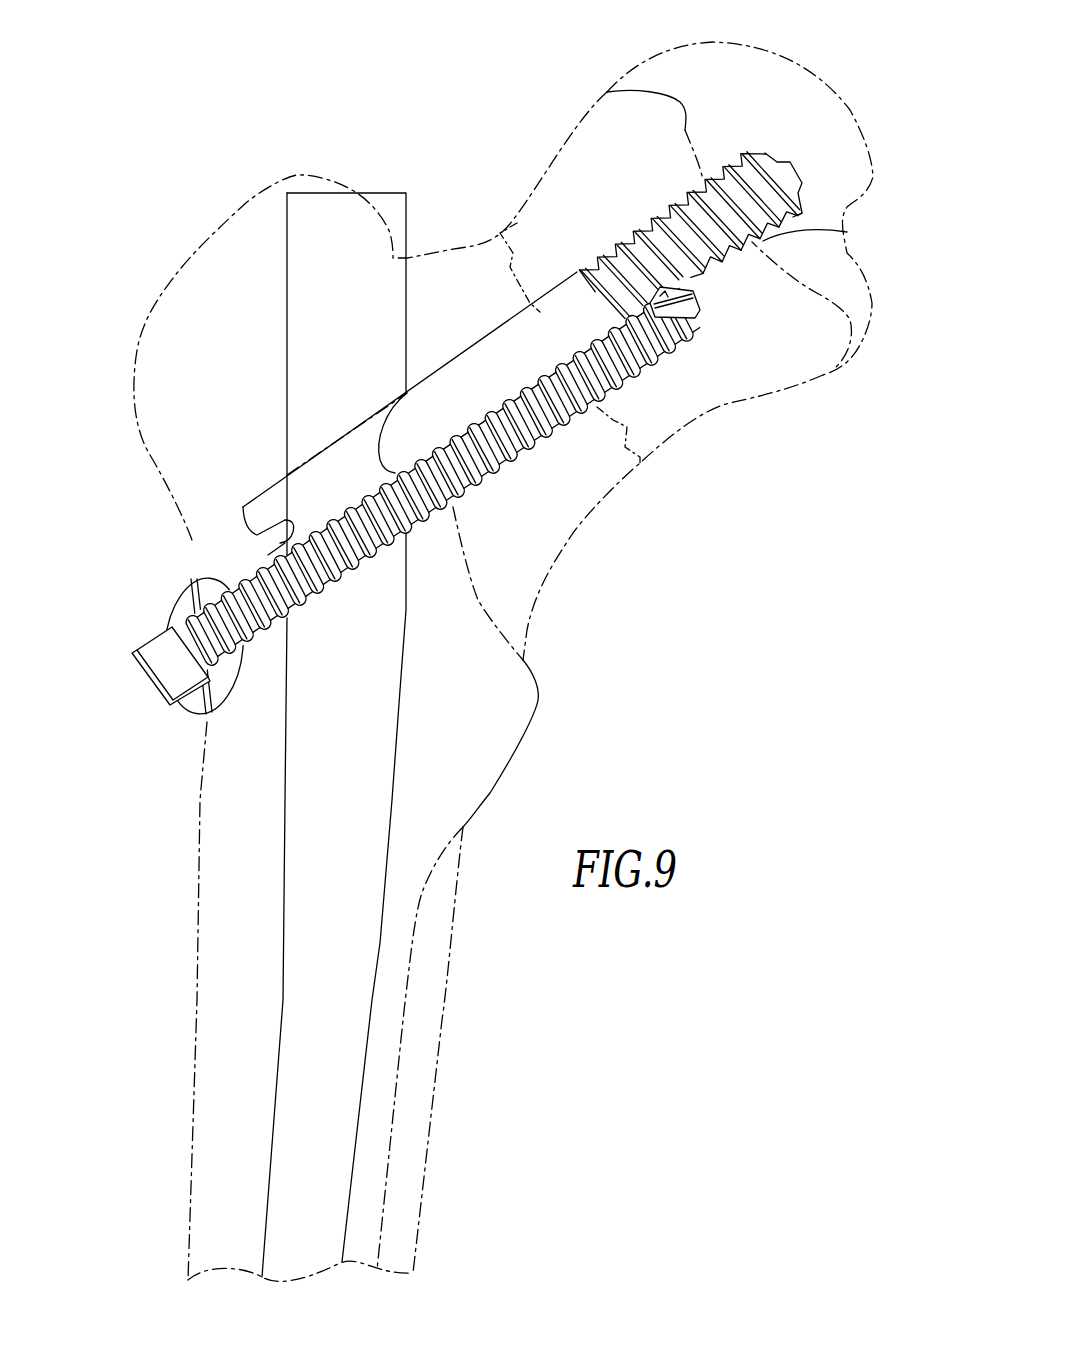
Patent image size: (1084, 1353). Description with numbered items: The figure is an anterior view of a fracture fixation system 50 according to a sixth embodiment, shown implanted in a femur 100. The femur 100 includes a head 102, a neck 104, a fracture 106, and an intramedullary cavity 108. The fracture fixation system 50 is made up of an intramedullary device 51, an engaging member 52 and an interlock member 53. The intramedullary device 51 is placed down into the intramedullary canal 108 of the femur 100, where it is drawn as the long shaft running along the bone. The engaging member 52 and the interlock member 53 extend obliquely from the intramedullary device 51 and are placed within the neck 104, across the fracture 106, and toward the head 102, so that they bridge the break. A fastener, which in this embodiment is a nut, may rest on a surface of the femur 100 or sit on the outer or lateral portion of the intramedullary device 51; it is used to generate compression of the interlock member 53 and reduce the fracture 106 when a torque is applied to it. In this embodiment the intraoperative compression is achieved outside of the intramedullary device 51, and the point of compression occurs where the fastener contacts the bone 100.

The fracture fixation system 50 is at (597, 543).
The intramedullary device 51 is at (360, 1113).
The engaging member 52 is at (830, 234).
The interlock member 53 is at (537, 447).
The femur 100 is at (177, 273).
The head 102 is at (818, 77).
The neck 104 is at (723, 407).
The fracture 106 is at (517, 223).
The intramedullary cavity 108 is at (280, 970).